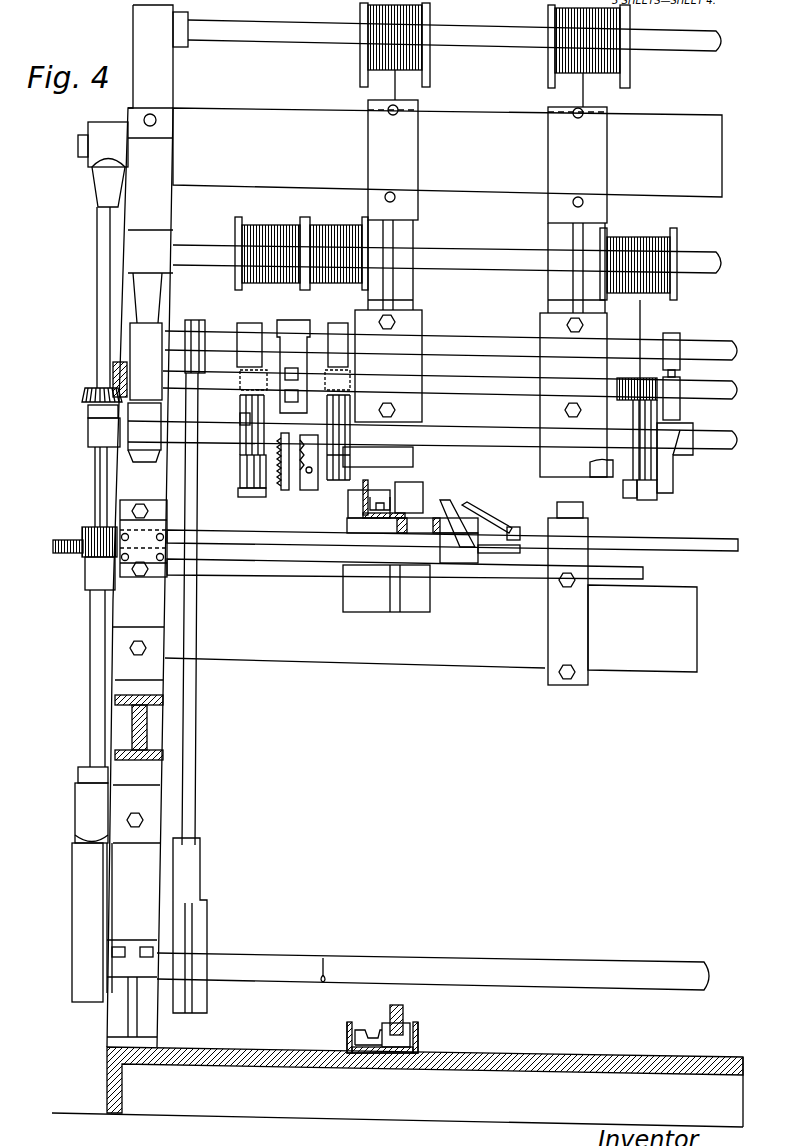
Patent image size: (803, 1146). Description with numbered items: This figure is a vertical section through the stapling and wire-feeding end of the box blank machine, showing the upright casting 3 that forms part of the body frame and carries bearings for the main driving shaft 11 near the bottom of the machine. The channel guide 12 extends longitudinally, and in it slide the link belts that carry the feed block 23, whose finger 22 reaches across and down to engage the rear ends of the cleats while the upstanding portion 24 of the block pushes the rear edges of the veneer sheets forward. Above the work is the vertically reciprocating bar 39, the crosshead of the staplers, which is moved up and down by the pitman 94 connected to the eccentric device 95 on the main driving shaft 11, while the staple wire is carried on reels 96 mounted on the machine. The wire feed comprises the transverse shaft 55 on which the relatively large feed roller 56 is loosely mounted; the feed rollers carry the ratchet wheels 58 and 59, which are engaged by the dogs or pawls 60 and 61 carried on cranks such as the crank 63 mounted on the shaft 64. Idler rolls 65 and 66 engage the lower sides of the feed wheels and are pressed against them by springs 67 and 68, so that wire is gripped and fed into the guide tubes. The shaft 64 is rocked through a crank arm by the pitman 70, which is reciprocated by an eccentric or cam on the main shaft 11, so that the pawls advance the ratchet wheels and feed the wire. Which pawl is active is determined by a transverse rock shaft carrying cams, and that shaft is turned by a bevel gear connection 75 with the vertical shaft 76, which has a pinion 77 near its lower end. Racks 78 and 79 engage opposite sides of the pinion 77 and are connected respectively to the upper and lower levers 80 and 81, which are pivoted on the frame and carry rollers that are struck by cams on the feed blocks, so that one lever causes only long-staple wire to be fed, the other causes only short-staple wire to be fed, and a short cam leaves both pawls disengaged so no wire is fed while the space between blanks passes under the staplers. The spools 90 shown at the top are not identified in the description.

The casting 3 is at (125, 618).
The main driving shaft 11 is at (367, 957).
The channel guide 12 is at (415, 533).
The finger 22 is at (380, 497).
The feed block 23 is at (449, 498).
The upstanding portion 24 is at (424, 486).
The vertically reciprocating bar 39 is at (277, 115).
The transverse shaft 55 is at (693, 460).
The feed roller 56 is at (242, 482).
The ratchet wheel 58 is at (243, 453).
The ratchet wheel 59 is at (345, 441).
The dog or pawl 60 is at (242, 425).
The dog or pawl 61 is at (343, 435).
The crank 63 is at (350, 372).
The shaft 64 is at (468, 336).
The idler roll 65 is at (243, 493).
The idler roll 66 is at (330, 473).
The spring 67 is at (272, 488).
The spring 68 is at (310, 488).
The pitman 70 is at (187, 773).
The bevel gear connection 75 is at (113, 372).
The vertical shaft 76 is at (100, 468).
The pinion 77 is at (93, 540).
The rack 78 is at (263, 557).
The rack 79 is at (282, 538).
The upper lever 80 is at (468, 512).
The lower lever 81 is at (502, 528).
The spool 90 is at (433, 10).
The pitman 94 is at (100, 315).
The eccentric device 95 is at (78, 883).
The reel 96 is at (290, 225).